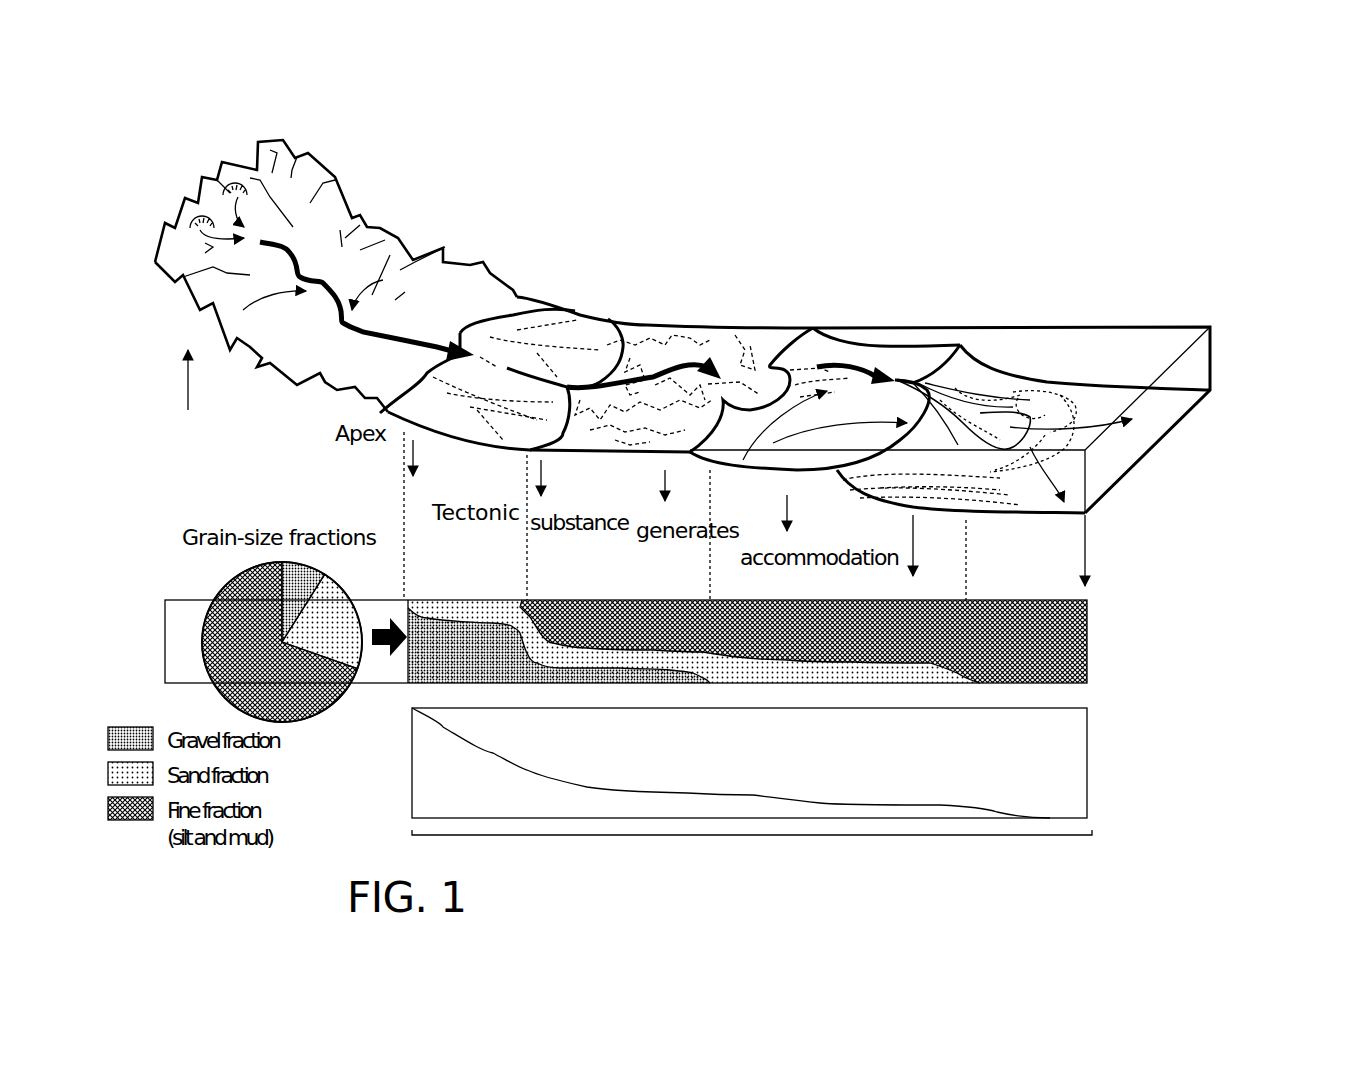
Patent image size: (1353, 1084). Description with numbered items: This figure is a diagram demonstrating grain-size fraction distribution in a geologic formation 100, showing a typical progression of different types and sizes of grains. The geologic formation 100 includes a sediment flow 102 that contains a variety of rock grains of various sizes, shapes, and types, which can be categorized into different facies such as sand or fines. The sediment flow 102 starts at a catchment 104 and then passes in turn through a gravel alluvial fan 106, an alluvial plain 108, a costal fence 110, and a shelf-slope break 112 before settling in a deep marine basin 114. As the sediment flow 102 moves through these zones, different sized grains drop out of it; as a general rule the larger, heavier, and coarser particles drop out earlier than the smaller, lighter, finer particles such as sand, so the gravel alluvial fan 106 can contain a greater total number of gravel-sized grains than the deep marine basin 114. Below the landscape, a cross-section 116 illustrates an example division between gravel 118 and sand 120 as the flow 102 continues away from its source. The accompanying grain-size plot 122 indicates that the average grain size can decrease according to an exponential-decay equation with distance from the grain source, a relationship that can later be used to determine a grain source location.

The geologic formation 100 is at (1040, 203).
The sediment flow 102 is at (306, 268).
The catchment 104 is at (366, 264).
The gravel alluvial fan 106 is at (560, 333).
The alluvial plain 108 is at (707, 337).
The costal fence 110 is at (853, 353).
The shelf-slope break 112 is at (943, 363).
The deep marine basin 114 is at (1107, 397).
The cross-section 116 is at (729, 595).
The gravel 118 is at (513, 633).
The sand 120 is at (1037, 598).
The grain size decay graph 122 is at (1115, 778).